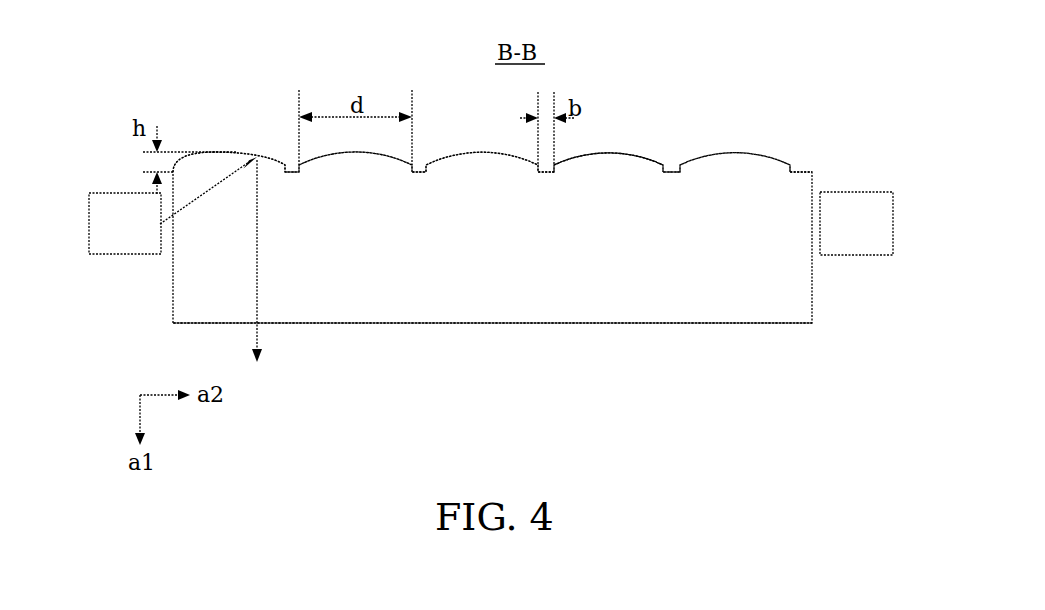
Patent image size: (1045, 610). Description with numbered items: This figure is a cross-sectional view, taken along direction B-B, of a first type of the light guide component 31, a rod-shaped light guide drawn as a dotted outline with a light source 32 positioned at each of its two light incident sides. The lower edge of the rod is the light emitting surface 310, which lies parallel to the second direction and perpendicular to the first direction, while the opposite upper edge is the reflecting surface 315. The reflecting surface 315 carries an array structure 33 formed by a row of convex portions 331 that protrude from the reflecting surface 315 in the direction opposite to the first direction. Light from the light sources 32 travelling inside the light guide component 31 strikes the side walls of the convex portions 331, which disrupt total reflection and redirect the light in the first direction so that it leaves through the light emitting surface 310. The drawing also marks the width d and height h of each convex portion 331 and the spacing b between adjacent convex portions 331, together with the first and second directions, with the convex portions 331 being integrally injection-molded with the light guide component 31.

The light guide component 31 is at (812, 278).
The light emitting surface 310 is at (688, 338).
The reflecting surface 315 is at (575, 184).
The light source 32 is at (118, 180).
The array structure 33 is at (757, 136).
The convex portion 331 is at (622, 150).